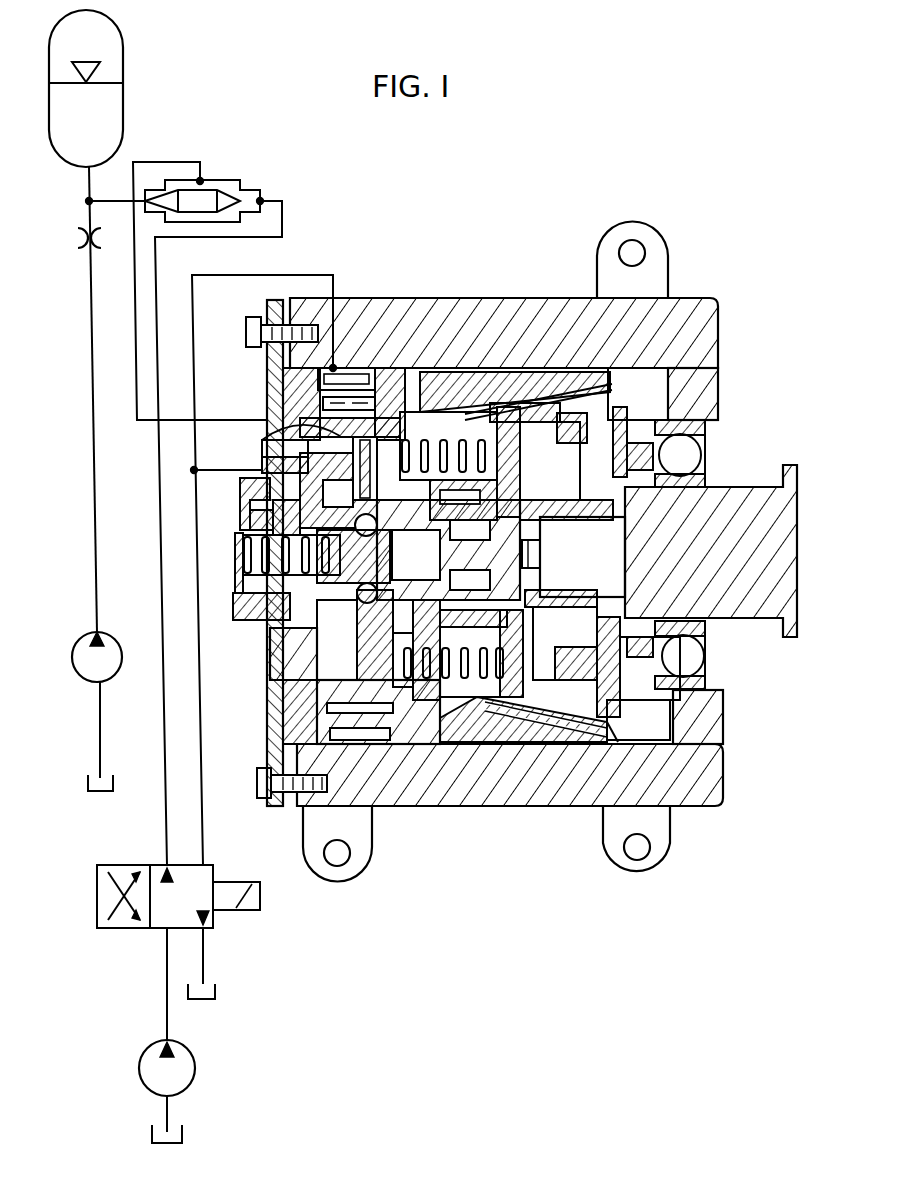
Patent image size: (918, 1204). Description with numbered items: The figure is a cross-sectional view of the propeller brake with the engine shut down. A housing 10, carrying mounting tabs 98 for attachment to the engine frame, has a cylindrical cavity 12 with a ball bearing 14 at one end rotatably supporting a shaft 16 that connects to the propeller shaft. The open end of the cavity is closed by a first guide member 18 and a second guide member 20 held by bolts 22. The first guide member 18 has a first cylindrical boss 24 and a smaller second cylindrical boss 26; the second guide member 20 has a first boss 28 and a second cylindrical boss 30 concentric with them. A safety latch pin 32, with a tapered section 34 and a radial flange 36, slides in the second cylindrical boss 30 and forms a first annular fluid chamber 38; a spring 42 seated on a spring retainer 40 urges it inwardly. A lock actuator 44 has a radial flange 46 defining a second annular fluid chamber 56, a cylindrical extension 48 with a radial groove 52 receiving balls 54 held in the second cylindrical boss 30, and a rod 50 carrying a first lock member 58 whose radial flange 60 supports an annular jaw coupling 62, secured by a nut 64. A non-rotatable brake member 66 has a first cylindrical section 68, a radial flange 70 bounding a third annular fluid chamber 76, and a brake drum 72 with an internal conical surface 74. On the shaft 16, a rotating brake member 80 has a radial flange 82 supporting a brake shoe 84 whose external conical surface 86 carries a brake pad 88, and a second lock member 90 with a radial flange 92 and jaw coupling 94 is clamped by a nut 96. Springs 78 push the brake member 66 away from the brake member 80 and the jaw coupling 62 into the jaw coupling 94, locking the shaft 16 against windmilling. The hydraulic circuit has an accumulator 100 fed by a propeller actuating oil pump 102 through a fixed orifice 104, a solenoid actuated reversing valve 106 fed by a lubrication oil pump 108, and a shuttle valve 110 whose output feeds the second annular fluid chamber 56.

The housing 10 is at (720, 340).
The cylindrical cavity 12 is at (700, 380).
The ball bearing 14 is at (718, 428).
The shaft 16 is at (764, 498).
The first guide member 18 is at (290, 745).
The second guide member 20 is at (268, 722).
The bolts 22 is at (250, 320).
The first cylindrical boss 24 is at (336, 672).
The second cylindrical boss 26 is at (458, 640).
The first boss 28 is at (268, 682).
The second cylindrical boss 30 is at (372, 634).
The safety latch pin 32 is at (252, 614).
The tapered section 34 is at (406, 566).
The radial flange 36 is at (246, 522).
The first annular fluid chamber 38 is at (280, 648).
The spring retainer 40 is at (240, 556).
The spring 42 is at (250, 590).
The lock actuator 44 is at (272, 428).
The radial flange 46 is at (350, 482).
The cylindrical extension 48 is at (448, 486).
The rod 50 is at (540, 556).
The radial groove 52 is at (395, 534).
The balls 54 is at (352, 506).
The second annular fluid chamber 56 is at (350, 464).
The first lock member 58 is at (474, 728).
The radial flange 60 is at (470, 678).
The annular jaw coupling 62 is at (540, 640).
The nut 64 is at (572, 580).
The non-rotatable brake member 66 is at (418, 380).
The first cylindrical section 68 is at (342, 360).
The radial flange 70 is at (408, 436).
The brake drum 72 is at (516, 364).
The internal conical surface 74 is at (470, 416).
The third annular fluid chamber 76 is at (384, 338).
The springs 78 is at (428, 680).
The rotating brake member 80 is at (644, 410).
The radial flange 82 is at (610, 718).
The brake shoe 84 is at (540, 700).
The external conical surface 86 is at (560, 368).
The brake pad 88 is at (600, 720).
The second lock member 90 is at (636, 676).
The radial flange 92 is at (572, 468).
The jaw coupling 94 is at (630, 378).
The nut 96 is at (570, 640).
The mounting tabs 98 is at (668, 265).
The accumulator 100 is at (126, 113).
The propeller actuating oil pump 102 is at (90, 636).
The fixed orifice 104 is at (76, 240).
The solenoid actuated reversing valve 106 is at (150, 840).
The lubrication oil pump 108 is at (196, 1060).
The shuttle valve 110 is at (228, 175).